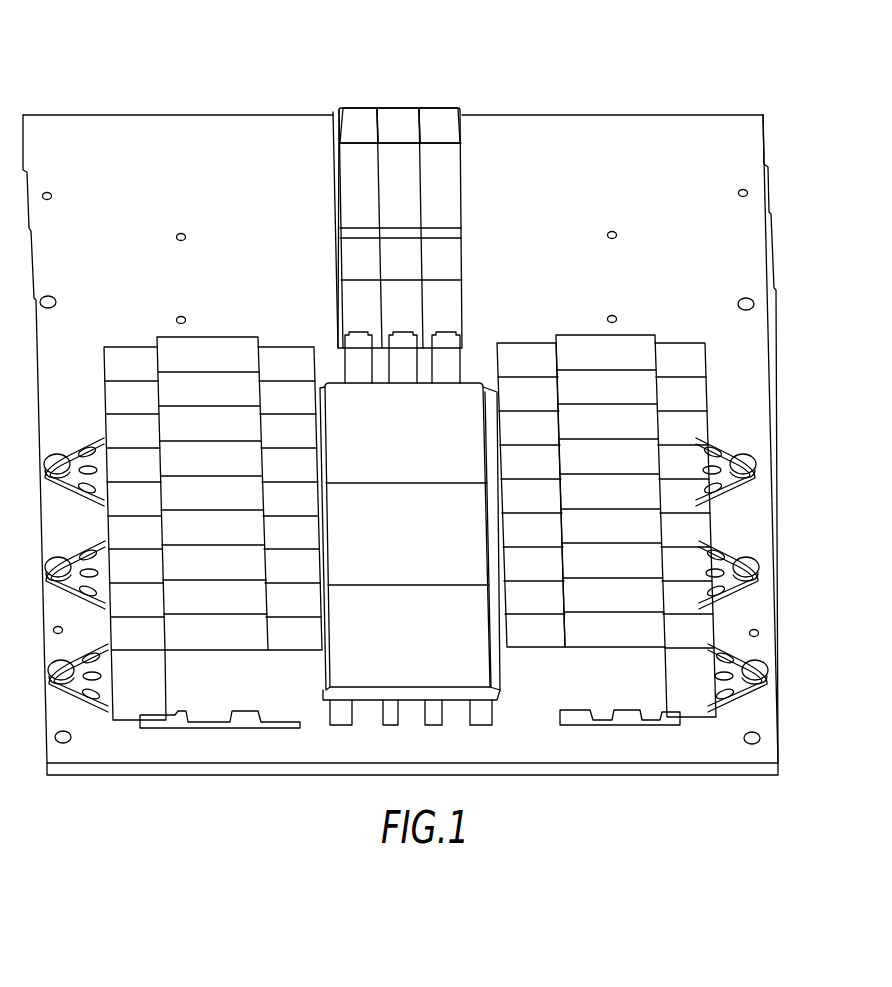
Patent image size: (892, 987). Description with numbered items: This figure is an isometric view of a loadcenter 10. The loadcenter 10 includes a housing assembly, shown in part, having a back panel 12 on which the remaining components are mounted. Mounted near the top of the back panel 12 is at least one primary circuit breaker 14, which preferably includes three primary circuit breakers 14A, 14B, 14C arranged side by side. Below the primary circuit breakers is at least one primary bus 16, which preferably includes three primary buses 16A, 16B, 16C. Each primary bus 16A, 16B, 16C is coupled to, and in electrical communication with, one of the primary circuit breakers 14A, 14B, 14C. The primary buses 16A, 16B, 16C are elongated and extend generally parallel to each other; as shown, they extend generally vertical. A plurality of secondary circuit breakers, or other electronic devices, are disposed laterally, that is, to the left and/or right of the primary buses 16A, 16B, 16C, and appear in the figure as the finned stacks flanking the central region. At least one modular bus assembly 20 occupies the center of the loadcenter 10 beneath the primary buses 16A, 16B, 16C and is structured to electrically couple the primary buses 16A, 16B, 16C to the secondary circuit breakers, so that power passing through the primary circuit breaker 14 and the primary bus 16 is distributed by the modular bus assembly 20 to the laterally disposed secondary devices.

The loadcenter 10 is at (232, 76).
The back panel 12 is at (125, 130).
The primary circuit breaker 14 is at (375, 187).
The first primary circuit breaker 14A is at (356, 125).
The second primary circuit breaker 14B is at (397, 125).
The third primary circuit breaker 14C is at (434, 125).
The primary bus 16 is at (361, 316).
The first primary bus 16A is at (356, 340).
The second primary bus 16B is at (399, 340).
The third primary bus 16C is at (446, 340).
The modular bus assembly 20 is at (378, 683).